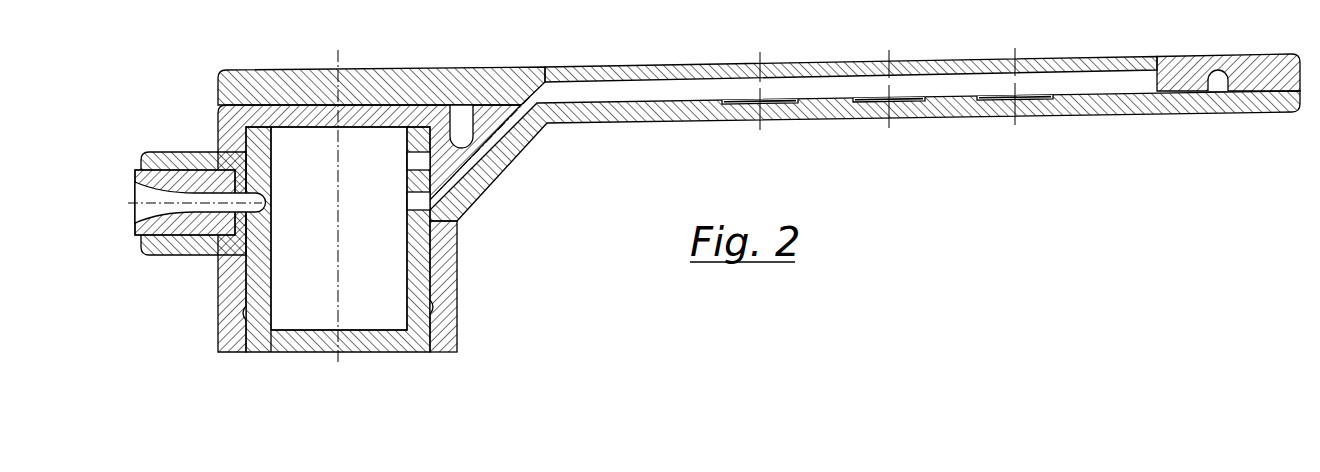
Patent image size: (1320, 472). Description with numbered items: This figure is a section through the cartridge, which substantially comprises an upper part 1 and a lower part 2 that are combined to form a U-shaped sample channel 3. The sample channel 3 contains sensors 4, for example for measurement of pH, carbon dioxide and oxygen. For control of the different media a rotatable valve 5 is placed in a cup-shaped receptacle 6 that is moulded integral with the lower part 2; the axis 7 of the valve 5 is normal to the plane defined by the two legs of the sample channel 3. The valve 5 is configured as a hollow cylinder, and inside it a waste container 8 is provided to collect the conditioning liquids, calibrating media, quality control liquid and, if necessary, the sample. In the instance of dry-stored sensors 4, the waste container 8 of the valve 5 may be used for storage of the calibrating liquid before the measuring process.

The upper part 1 is at (402, 72).
The lower part 2 is at (611, 122).
The sample channel 3 is at (643, 80).
The sensors 4 is at (752, 102).
The rotatable valve 5 is at (361, 336).
The cup-shaped receptacle 6 is at (450, 242).
The axis 7 is at (343, 172).
The waste container 8 is at (315, 241).